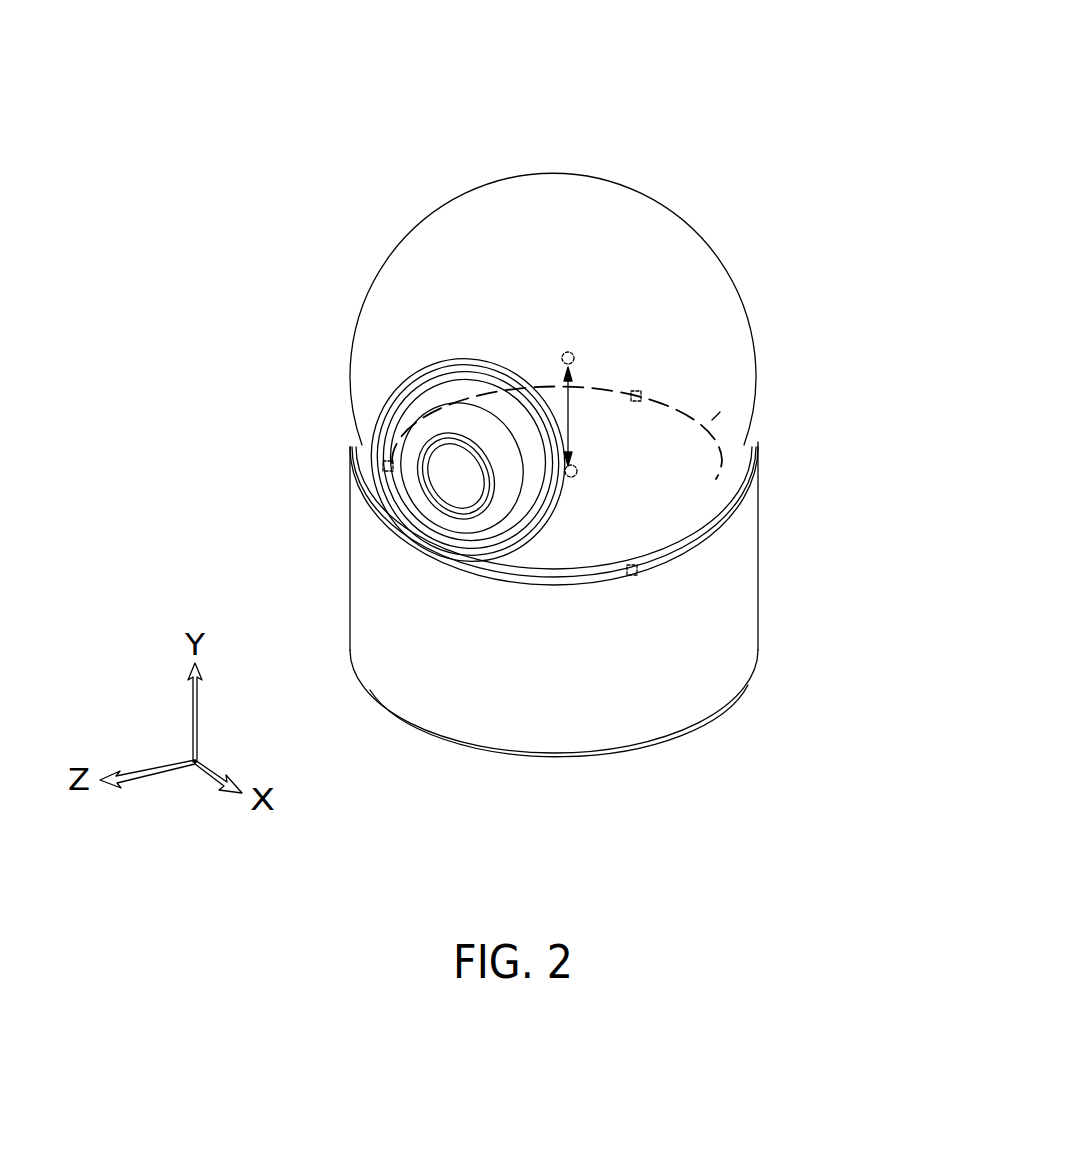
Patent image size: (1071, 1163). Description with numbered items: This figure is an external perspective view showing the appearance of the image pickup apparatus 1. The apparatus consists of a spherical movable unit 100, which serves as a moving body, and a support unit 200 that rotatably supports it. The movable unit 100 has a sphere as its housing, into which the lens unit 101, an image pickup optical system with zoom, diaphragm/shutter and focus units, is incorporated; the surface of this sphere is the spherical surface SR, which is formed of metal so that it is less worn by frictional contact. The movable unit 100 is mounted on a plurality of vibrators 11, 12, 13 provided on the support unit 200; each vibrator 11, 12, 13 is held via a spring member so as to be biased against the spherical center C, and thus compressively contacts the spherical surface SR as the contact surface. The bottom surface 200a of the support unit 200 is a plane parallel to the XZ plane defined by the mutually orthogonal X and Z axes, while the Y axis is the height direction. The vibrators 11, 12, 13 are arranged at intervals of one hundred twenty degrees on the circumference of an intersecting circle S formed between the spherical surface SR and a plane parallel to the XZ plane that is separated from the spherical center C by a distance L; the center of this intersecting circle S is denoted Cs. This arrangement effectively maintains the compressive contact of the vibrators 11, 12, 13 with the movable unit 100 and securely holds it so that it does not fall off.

The image pickup apparatus 1 is at (547, 444).
The movable unit 100 is at (400, 243).
The lens unit 101 is at (445, 470).
The vibrator 11 is at (640, 390).
The vibrator 12 is at (625, 575).
The vibrator 13 is at (388, 466).
The support unit 200 is at (626, 659).
The bottom surface 200a is at (573, 753).
The spherical center C is at (568, 350).
The center of the intersecting circle Cs is at (589, 461).
The intersecting circle S is at (713, 450).
The spherical surface SR is at (712, 420).
The distance L is at (581, 416).